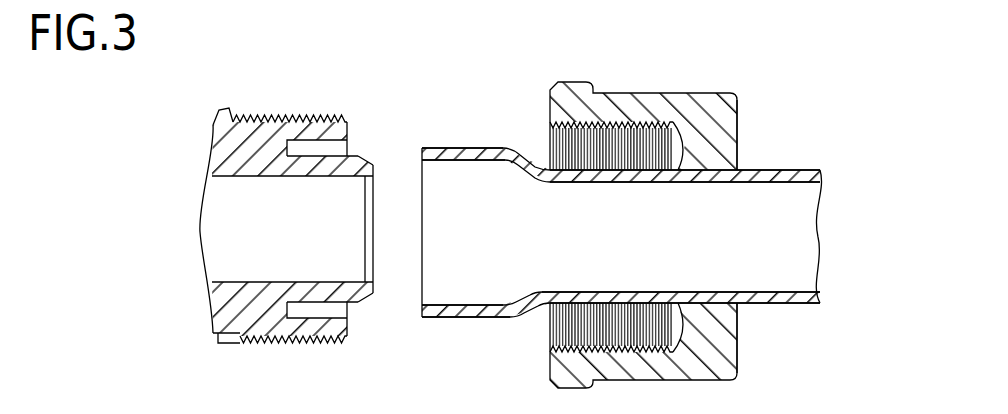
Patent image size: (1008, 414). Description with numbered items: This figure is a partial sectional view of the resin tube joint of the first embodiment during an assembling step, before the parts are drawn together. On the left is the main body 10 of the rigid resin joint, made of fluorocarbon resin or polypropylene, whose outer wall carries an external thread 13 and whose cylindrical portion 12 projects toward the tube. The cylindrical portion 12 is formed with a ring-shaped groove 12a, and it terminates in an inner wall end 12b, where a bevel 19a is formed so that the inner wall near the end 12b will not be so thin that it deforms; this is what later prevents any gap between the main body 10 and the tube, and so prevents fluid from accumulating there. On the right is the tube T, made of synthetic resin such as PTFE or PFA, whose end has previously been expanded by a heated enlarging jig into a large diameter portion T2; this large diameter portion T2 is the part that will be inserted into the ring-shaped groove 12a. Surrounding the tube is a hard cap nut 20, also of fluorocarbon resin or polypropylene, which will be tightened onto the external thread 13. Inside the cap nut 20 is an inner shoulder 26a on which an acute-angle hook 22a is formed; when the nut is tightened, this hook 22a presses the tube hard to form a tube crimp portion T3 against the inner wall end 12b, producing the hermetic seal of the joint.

The main body 10 is at (248, 288).
The cylindrical portion 12 is at (337, 288).
The ring-shaped groove 12a is at (349, 138).
The inner wall end 12b is at (371, 157).
The external thread 13 is at (310, 118).
The bevel 19a is at (375, 276).
The cap nut 20 is at (614, 93).
The acute-angle hook 22a is at (690, 325).
The inner shoulder 26a is at (705, 121).
The tube T is at (603, 172).
The large diameter portion T2 is at (467, 305).
The tube crimp portion T3 is at (537, 299).